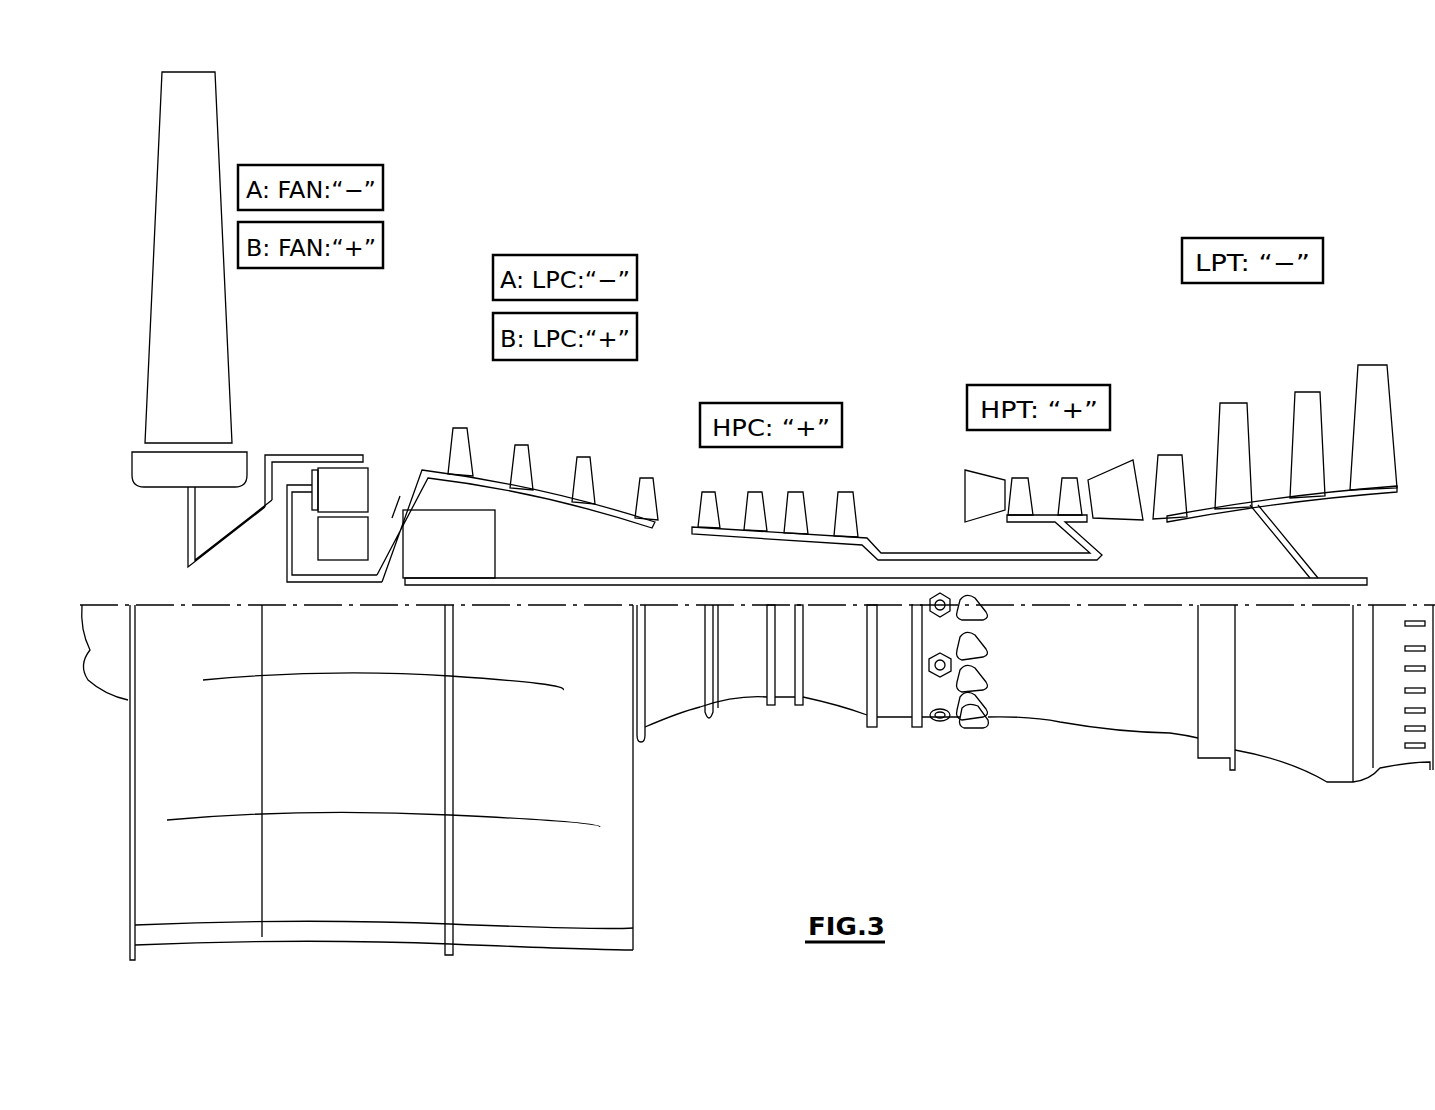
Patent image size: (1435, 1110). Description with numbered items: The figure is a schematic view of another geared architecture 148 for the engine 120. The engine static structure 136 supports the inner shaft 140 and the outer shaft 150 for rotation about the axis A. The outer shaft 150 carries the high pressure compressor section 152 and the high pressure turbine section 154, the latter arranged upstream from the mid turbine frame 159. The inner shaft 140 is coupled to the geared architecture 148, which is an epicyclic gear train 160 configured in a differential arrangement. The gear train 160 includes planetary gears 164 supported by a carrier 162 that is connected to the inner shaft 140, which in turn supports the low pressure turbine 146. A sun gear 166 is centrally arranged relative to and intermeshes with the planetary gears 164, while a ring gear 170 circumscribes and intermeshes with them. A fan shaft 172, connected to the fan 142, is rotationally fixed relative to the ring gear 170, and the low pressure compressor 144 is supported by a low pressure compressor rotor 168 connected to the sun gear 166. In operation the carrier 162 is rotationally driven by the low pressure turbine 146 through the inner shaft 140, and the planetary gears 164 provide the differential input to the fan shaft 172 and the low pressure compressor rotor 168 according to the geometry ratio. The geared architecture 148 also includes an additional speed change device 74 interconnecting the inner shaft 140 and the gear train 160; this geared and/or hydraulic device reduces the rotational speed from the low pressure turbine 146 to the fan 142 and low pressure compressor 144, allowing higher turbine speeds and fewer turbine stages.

The engine 120 is at (852, 218).
The fan 142 is at (205, 118).
The geared architecture 148 is at (408, 414).
The low pressure compressor 144 is at (443, 415).
The high pressure compressor section 152 is at (690, 395).
The high pressure turbine section 154 is at (1088, 380).
The low pressure turbine 146 is at (1143, 332).
The engine static structure 136 is at (938, 414).
The outer shaft 150 is at (915, 553).
The mid turbine frame 159 is at (1123, 460).
The inner shaft 140 is at (648, 590).
The epicyclic gear train 160 is at (284, 593).
The carrier 162 is at (286, 548).
The planetary gears 164 is at (363, 488).
The sun gear 166 is at (348, 560).
The low pressure compressor rotor 168 is at (392, 518).
The ring gear 170 is at (345, 455).
The fan shaft 172 is at (260, 503).
The speed change device 74 is at (485, 557).
The axis A is at (557, 606).